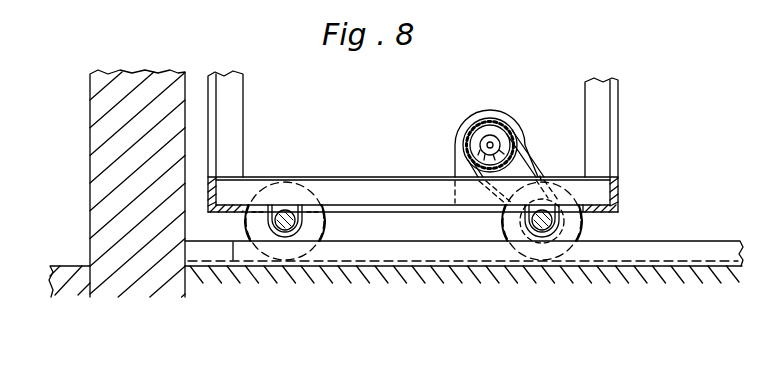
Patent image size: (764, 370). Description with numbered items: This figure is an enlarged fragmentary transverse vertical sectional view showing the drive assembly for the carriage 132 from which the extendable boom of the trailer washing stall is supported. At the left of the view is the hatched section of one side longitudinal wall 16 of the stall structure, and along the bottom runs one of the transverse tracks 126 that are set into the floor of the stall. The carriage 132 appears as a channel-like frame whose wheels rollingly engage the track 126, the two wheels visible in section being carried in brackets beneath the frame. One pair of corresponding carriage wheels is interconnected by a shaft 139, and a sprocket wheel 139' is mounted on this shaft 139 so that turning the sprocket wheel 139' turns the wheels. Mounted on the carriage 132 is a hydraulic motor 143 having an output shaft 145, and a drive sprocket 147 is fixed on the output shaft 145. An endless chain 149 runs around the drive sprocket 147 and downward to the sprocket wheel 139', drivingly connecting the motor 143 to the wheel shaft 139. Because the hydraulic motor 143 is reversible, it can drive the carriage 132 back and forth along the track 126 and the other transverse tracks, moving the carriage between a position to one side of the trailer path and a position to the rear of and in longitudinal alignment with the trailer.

The side longitudinal wall 16 is at (115, 155).
The transverse track 126 is at (645, 252).
The carriage 132 is at (619, 133).
The shaft 139 is at (542, 185).
The sprocket wheel 139' is at (542, 255).
The hydraulic motor 143 is at (502, 120).
The output shaft 145 is at (490, 145).
The drive sprocket 147 is at (483, 127).
The endless chain 149 is at (535, 175).